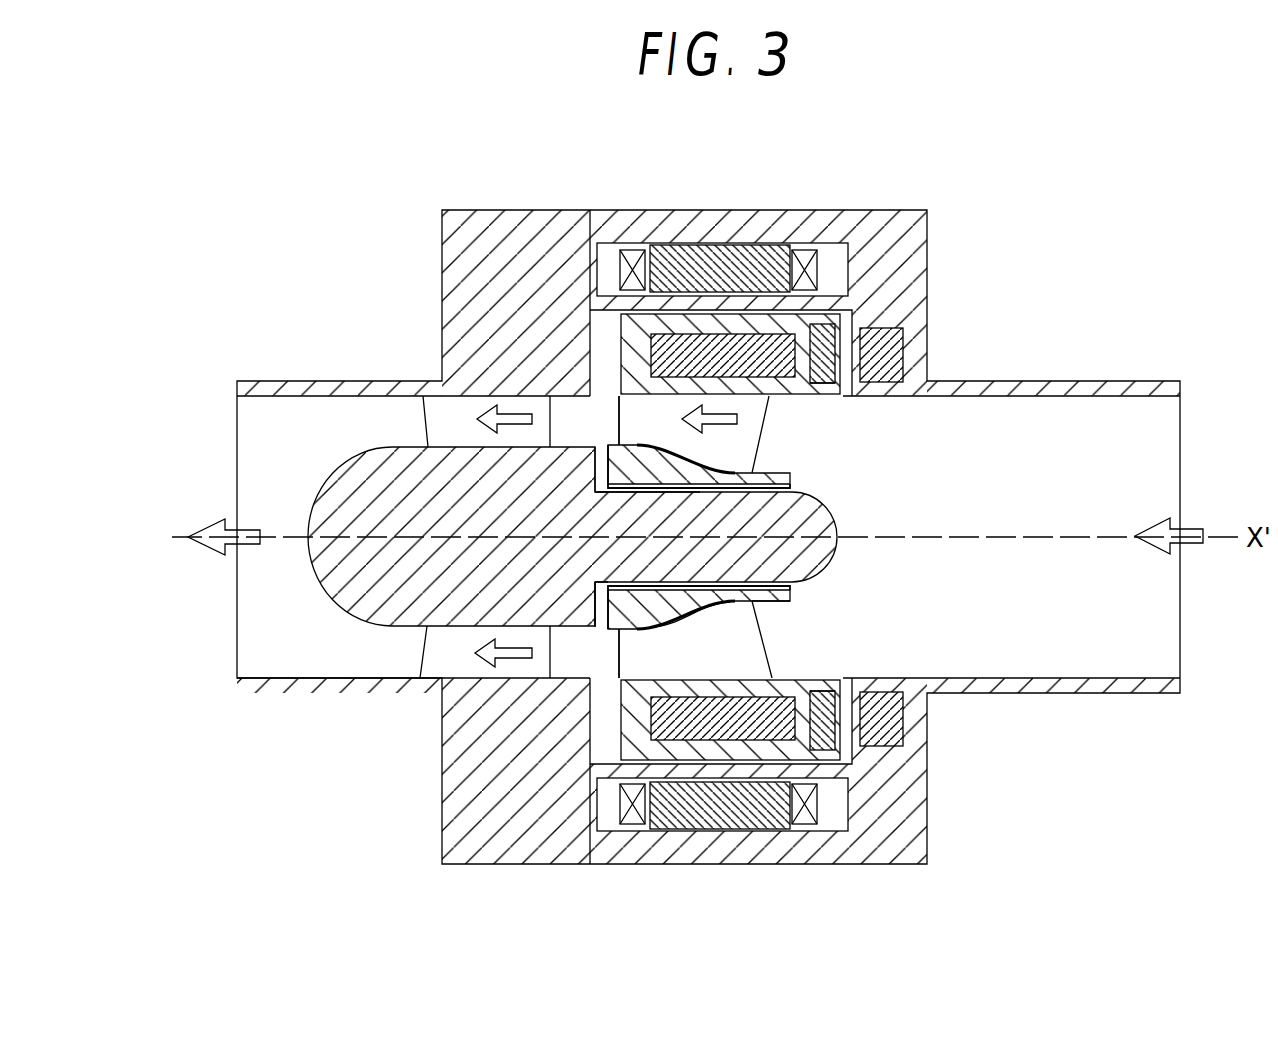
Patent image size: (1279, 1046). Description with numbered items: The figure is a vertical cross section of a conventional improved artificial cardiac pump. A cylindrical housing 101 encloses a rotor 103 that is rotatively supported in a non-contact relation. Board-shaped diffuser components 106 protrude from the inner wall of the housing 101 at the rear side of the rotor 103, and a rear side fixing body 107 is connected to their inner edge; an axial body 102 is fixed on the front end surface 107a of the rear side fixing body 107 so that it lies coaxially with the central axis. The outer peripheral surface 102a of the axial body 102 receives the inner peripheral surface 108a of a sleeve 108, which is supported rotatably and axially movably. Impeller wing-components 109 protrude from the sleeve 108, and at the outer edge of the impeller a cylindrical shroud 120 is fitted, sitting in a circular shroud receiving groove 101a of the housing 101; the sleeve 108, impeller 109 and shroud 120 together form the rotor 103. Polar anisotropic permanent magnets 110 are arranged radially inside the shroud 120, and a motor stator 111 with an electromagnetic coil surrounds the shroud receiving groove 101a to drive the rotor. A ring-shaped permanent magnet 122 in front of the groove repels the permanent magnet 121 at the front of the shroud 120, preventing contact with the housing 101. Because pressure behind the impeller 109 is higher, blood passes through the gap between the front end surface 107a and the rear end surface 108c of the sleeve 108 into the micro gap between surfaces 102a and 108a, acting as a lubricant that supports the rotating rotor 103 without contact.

The cylindrical housing 101 is at (890, 210).
The shroud receiving groove 101a is at (598, 352).
The axial body 102 is at (818, 557).
The outer peripheral surface of the axial body 102a is at (807, 490).
The rotor 103 is at (592, 419).
The diffuser component 106 is at (467, 413).
The rear side fixing body 107 is at (345, 483).
The front end surface of the rear side fixing body 107a is at (602, 607).
The sleeve 108 is at (643, 445).
The inner peripheral surface of the sleeve 108a is at (777, 602).
The rear end surface of the sleeve 108c is at (638, 630).
The impeller wing-component 109 is at (665, 413).
The polar anisotropic permanent magnet 110 is at (742, 348).
The motor stator 111 is at (717, 255).
The shroud 120 is at (812, 324).
The permanent magnet 121 is at (831, 330).
The ring-shaped permanent magnet 122 is at (895, 350).